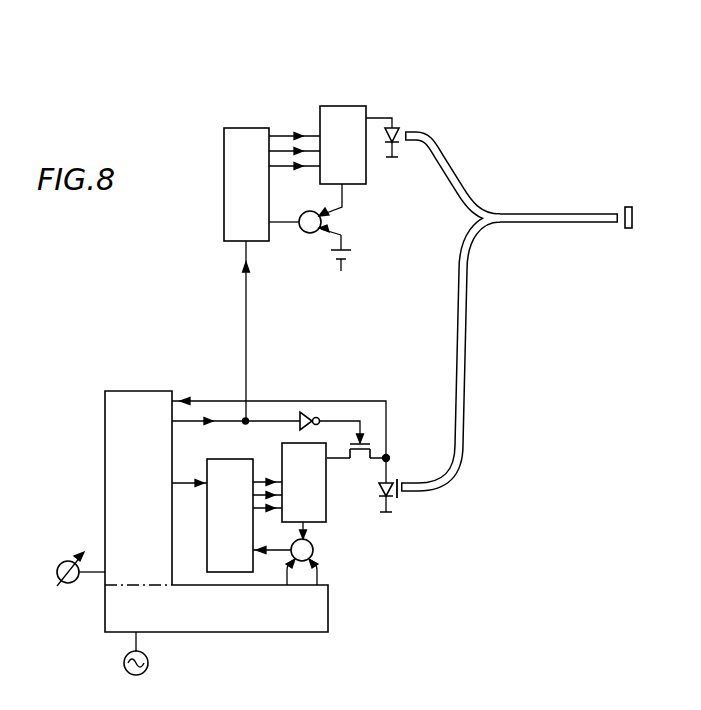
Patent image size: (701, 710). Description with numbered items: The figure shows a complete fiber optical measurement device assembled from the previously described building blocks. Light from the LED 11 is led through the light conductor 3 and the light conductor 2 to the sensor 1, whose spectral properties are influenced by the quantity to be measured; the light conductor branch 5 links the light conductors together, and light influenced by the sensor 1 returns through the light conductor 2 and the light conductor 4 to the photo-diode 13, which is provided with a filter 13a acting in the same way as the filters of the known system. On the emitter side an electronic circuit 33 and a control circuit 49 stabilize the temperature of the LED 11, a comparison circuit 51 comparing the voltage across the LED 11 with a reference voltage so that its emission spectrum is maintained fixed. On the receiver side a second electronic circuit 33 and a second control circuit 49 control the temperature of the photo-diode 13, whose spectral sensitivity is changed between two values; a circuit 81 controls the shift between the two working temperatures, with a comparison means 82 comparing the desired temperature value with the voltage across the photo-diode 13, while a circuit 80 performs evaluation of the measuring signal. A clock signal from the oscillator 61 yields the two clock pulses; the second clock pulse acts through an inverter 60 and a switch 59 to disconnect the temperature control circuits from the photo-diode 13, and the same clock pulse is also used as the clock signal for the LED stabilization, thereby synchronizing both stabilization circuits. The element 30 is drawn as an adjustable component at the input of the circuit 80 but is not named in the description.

The sensor 1 is at (631, 207).
The light conductor 2 is at (545, 213).
The light conductor 3 is at (442, 167).
The light conductor 4 is at (466, 370).
The light conductor branch 5 is at (488, 212).
The LED 11 is at (396, 126).
The photo-diode 13 is at (392, 481).
The filter 13a is at (399, 496).
The potentiometer 30 is at (59, 561).
The electronic circuit 33 is at (341, 106).
The electronic circuit 49 is at (243, 127).
The comparison circuit 51 is at (323, 222).
The switch 59 is at (372, 446).
The inverter 60 is at (303, 411).
The oscillator 61 is at (148, 659).
The circuit 80 is at (147, 390).
The circuit 81 is at (328, 601).
The comparison means 82 is at (314, 546).